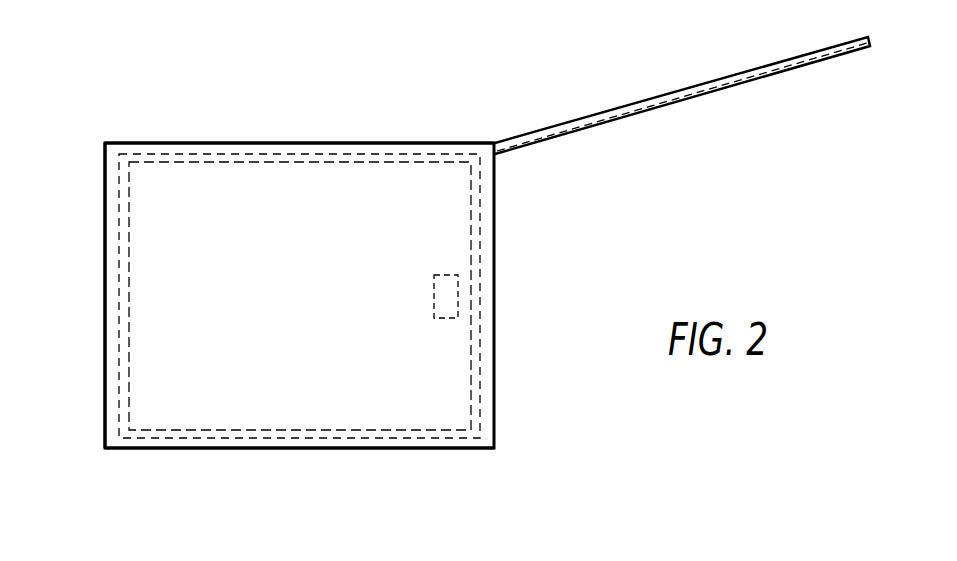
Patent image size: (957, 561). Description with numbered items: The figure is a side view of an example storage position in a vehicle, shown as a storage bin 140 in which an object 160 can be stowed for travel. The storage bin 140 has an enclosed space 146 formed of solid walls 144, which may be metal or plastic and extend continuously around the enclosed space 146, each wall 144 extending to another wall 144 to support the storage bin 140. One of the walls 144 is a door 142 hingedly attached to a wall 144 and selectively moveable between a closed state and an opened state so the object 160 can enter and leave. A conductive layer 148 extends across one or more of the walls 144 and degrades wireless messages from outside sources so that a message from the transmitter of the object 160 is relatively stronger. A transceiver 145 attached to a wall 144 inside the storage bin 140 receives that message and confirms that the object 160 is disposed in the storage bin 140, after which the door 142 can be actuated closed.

The storage bin 140 is at (185, 60).
The door 142 is at (672, 91).
The walls 144 is at (258, 142).
The transceiver 145 is at (435, 283).
The enclosed space 146 is at (446, 222).
The conductive layer 148 is at (184, 424).
The object 160 is at (681, 555).